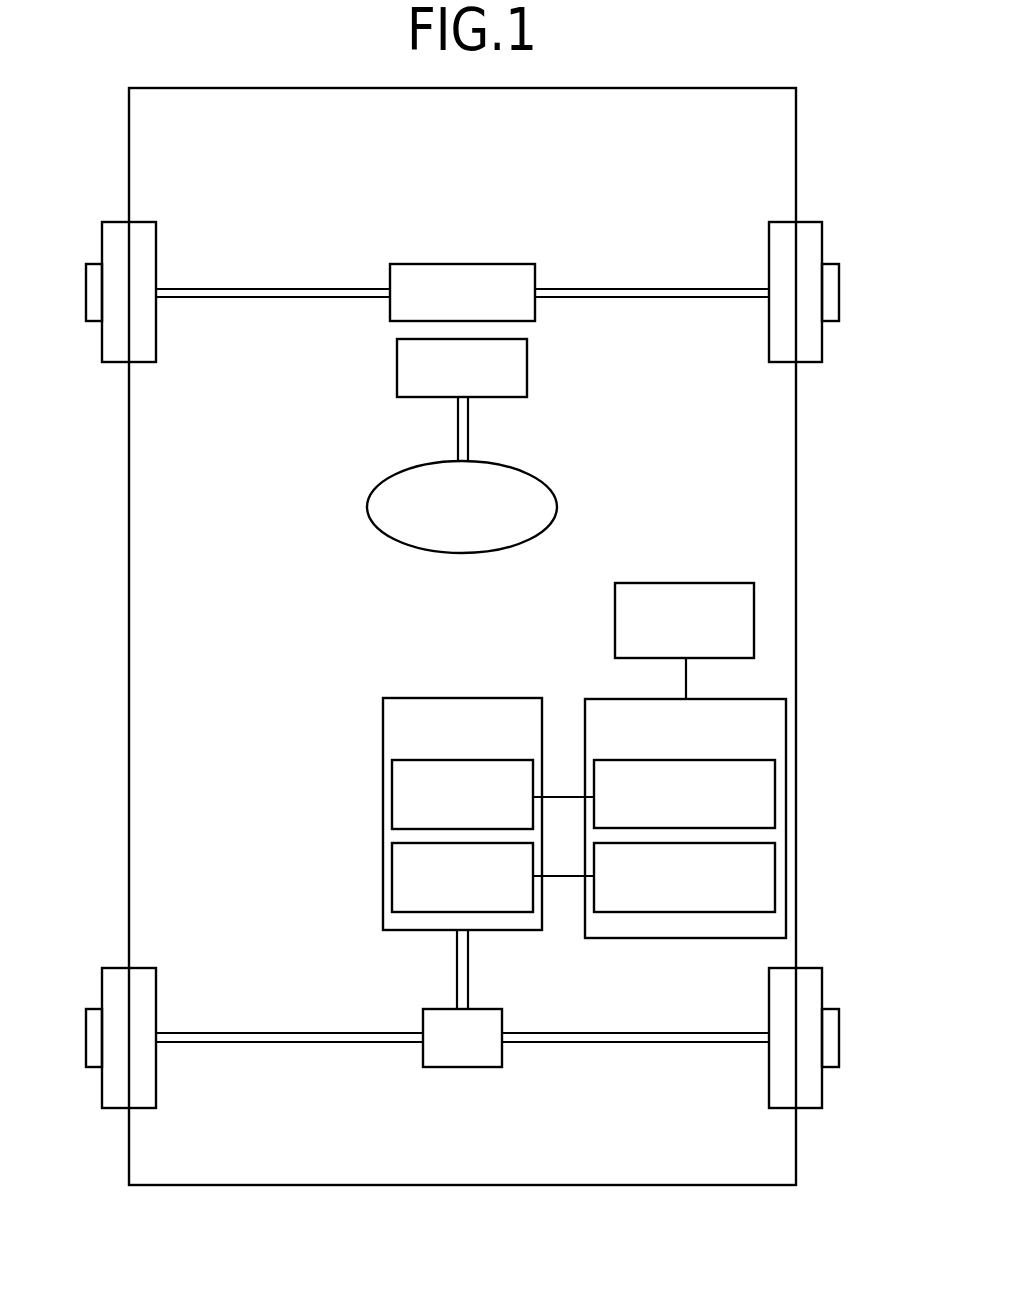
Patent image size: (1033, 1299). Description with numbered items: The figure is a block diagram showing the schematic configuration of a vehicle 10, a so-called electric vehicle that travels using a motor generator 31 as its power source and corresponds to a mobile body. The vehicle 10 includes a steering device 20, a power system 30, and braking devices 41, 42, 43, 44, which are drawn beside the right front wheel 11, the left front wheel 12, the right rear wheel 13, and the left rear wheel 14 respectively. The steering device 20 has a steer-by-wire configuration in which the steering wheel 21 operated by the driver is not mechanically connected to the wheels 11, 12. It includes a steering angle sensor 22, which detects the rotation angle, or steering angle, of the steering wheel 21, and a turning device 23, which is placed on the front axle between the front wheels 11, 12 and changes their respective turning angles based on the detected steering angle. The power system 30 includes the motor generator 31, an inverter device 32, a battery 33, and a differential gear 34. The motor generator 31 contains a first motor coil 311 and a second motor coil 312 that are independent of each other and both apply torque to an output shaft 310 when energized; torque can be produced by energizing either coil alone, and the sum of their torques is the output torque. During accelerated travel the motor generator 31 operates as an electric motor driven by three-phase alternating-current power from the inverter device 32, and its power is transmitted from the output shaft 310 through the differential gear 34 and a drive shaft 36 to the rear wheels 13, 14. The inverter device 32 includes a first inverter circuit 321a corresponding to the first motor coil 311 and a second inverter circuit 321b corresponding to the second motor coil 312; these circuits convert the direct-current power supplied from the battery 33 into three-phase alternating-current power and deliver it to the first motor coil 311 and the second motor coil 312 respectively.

The vehicle 10 is at (873, 174).
The right front wheel 11 is at (807, 222).
The left front wheel 12 is at (117, 222).
The right rear wheel 13 is at (807, 968).
The left rear wheel 14 is at (117, 968).
The steering device 20 is at (461, 376).
The steering wheel 21 is at (557, 503).
The steering angle sensor 22 is at (527, 365).
The turning device 23 is at (498, 264).
The power system 30 is at (587, 743).
The motor generator 31 is at (502, 698).
The inverter device 32 is at (707, 699).
The battery 33 is at (725, 583).
The differential gear 34 is at (488, 1009).
The drive shaft 36 is at (390, 1044).
The braking device 41 is at (831, 264).
The braking device 42 is at (92, 264).
The braking device 43 is at (831, 1009).
The braking device 44 is at (92, 1009).
The output shaft 310 is at (457, 963).
The first motor coil 311 is at (392, 799).
The second motor coil 312 is at (392, 882).
The first inverter circuit 321a is at (775, 793).
The second inverter circuit 321b is at (775, 875).